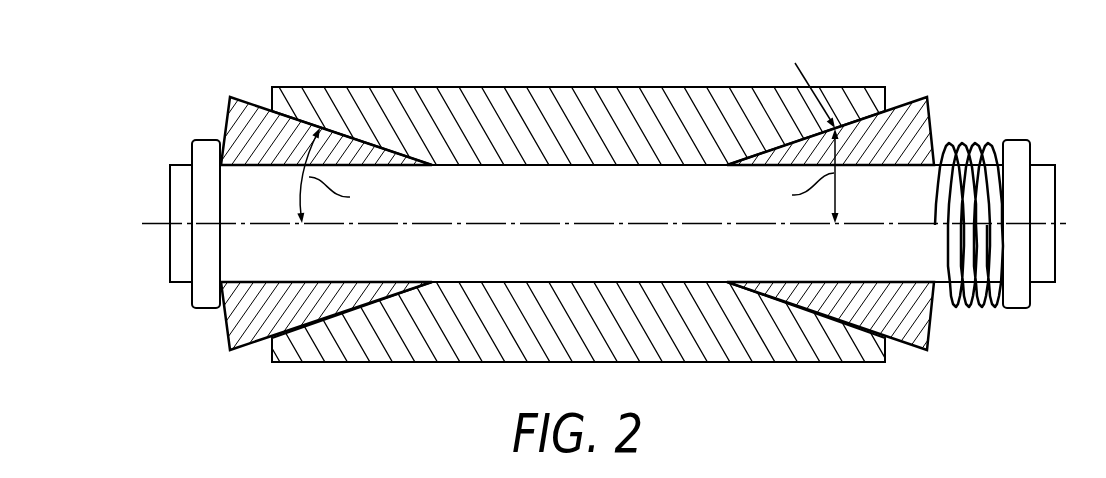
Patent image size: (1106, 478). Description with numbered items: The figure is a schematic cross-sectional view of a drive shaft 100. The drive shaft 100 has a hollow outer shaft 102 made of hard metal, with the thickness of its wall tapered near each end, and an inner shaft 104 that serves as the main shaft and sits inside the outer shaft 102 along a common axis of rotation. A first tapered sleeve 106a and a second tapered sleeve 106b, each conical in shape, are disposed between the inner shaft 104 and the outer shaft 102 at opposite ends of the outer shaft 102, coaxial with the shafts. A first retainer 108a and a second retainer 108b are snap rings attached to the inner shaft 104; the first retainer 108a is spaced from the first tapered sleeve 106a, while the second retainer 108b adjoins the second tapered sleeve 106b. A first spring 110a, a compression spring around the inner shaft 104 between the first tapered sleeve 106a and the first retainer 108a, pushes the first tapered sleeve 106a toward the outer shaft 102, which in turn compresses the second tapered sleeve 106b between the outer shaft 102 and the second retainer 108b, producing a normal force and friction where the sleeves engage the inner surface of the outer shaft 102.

The drive shaft 100 is at (200, 80).
The outer shaft 102 is at (547, 87).
The inner shaft 104 is at (170, 200).
The first tapered sleeve 106a is at (933, 335).
The second tapered sleeve 106b is at (221, 317).
The first retainer 108a is at (1017, 140).
The second retainer 108b is at (207, 140).
The first spring 110a is at (963, 305).